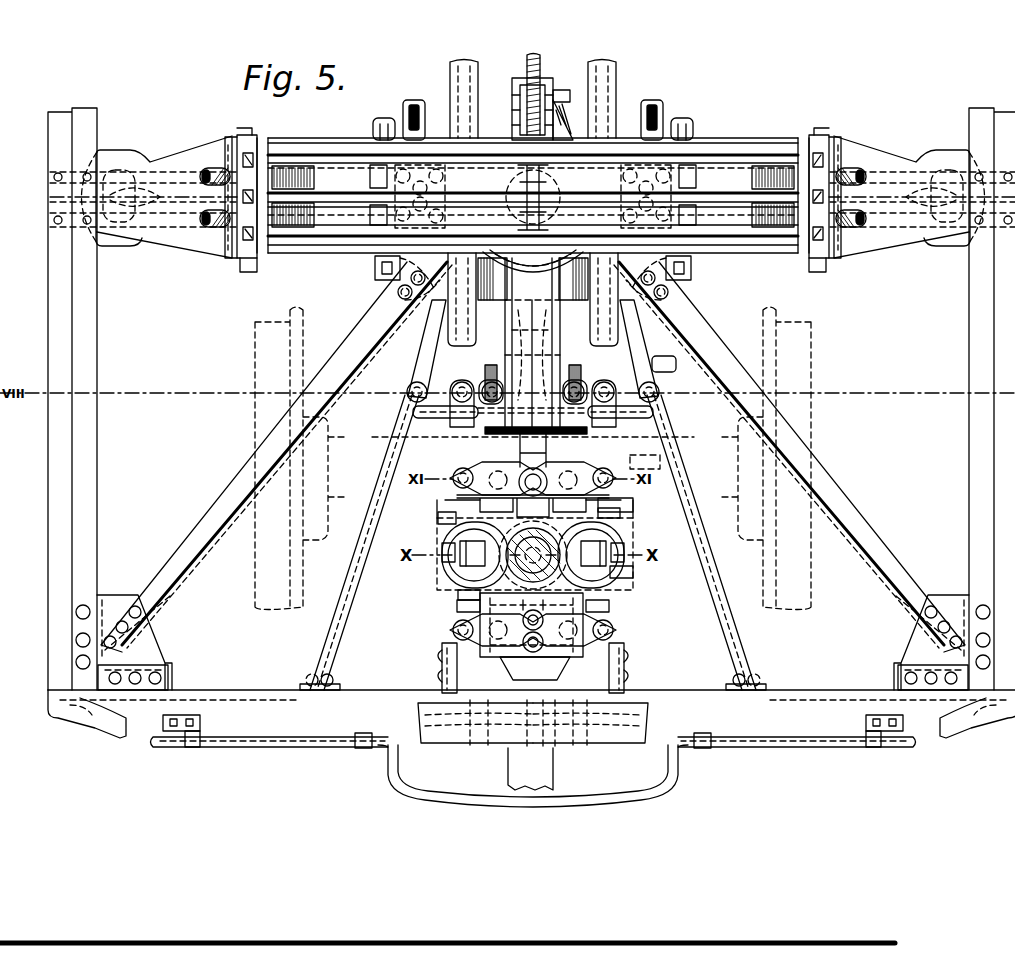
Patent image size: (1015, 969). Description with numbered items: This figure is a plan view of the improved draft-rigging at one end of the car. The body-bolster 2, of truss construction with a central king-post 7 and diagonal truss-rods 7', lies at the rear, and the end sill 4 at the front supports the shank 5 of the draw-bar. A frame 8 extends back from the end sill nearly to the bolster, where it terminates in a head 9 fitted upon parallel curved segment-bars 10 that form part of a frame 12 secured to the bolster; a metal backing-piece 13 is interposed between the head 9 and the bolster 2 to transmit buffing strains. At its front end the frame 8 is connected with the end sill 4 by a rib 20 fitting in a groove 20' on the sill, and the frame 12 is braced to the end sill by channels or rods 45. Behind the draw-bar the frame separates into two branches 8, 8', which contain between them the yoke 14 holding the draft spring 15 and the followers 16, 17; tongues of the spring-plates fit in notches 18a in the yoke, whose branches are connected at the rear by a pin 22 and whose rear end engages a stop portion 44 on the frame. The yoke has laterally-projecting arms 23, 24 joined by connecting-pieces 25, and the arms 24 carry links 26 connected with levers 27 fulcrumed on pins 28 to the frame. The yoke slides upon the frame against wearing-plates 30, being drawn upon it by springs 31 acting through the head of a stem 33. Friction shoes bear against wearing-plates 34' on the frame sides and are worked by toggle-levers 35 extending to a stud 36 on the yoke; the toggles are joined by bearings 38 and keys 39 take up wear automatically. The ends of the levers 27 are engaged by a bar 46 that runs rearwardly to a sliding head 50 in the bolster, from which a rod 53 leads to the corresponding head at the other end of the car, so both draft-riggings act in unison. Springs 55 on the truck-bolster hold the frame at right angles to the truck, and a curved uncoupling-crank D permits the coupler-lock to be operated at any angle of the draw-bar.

The body-bolster 2 is at (533, 197).
The end sill 4 is at (533, 730).
The shank of draw-bar 5 is at (545, 778).
The central king-post 7 is at (533, 195).
The diagonal truss-rods 7' is at (534, 200).
The frame 8 is at (449, 607).
The frame branch 8' is at (618, 608).
The head 9 is at (533, 346).
The segment-bars 10 is at (533, 279).
The frame 12 is at (402, 288).
The backing-piece 13 is at (540, 263).
The yoke 14 is at (462, 470).
The draft spring 15 is at (632, 524).
The follower 16 is at (455, 585).
The follower 17 is at (458, 525).
The notches in yoke 18a is at (628, 504).
The rib 20 is at (475, 742).
The grooves on sill 20' is at (590, 743).
The pin 22 is at (527, 472).
The laterally-projecting arms 23 is at (452, 632).
The laterally-projecting arms 24 is at (452, 486).
The connecting-pieces 25 is at (443, 520).
The links 26 is at (460, 435).
The levers 27 is at (426, 385).
The pins 28 is at (488, 386).
The wearing-plates 30 is at (468, 438).
The springs 31 is at (640, 482).
The stem 33 is at (662, 463).
The wearing-plates 34' is at (505, 561).
The toggle-levers 35 is at (612, 565).
The stud 36 is at (452, 564).
The bearings 38 is at (425, 573).
The key 39 is at (432, 538).
The stop portion 44 is at (668, 368).
The channels or rods 45 is at (215, 513).
The bar 46 is at (562, 334).
The sliding head 50 is at (495, 137).
The rod 53 is at (541, 62).
The springs 55 is at (352, 240).
The uncoupling-crank D is at (527, 805).